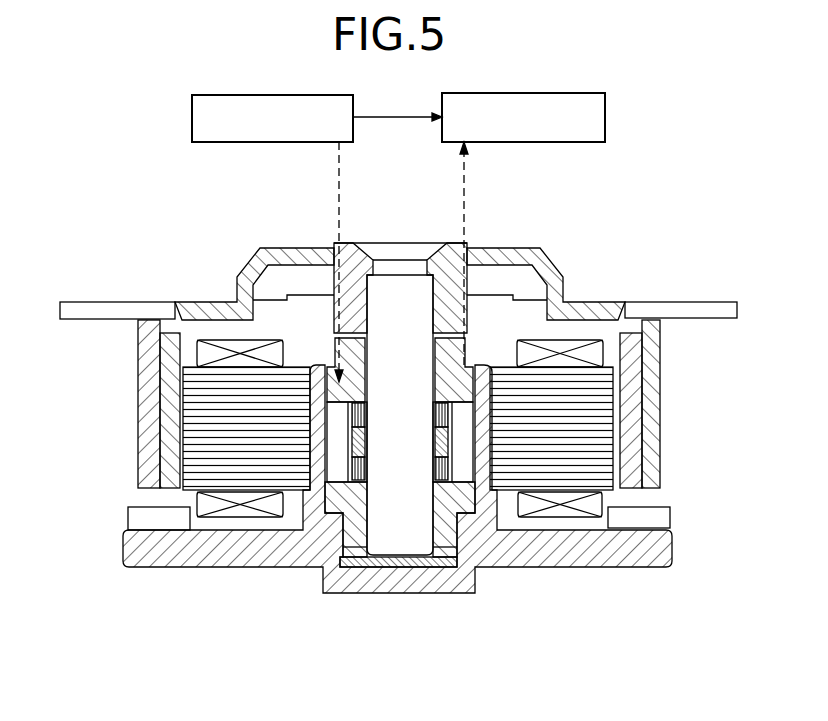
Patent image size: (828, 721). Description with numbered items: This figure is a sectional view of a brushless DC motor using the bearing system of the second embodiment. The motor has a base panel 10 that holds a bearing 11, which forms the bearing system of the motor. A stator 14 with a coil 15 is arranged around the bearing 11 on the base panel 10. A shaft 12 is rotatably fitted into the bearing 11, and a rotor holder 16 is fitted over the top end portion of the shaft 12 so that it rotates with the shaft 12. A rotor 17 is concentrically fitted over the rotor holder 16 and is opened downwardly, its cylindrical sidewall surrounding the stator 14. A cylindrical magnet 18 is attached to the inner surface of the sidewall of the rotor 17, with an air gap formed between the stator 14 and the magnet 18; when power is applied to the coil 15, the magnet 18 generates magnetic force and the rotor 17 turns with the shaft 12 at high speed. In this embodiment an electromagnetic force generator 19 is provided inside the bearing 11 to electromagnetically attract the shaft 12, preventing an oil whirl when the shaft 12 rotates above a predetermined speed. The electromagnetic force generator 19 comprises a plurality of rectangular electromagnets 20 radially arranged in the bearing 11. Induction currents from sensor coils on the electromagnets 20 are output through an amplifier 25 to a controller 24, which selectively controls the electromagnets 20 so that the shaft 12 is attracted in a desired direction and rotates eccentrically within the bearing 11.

The base panel 10 is at (197, 583).
The bearing 11 is at (447, 522).
The shaft 12 is at (400, 525).
The stator 14 is at (583, 463).
The coil 15 is at (590, 355).
The rotor holder 16 is at (338, 283).
The rotor 17 is at (205, 310).
The cylindrical magnet 18 is at (162, 418).
The electromagnetic force generator 19 is at (464, 495).
The electromagnets 20 is at (337, 443).
The controller 24 is at (563, 142).
The amplifier 25 is at (192, 115).